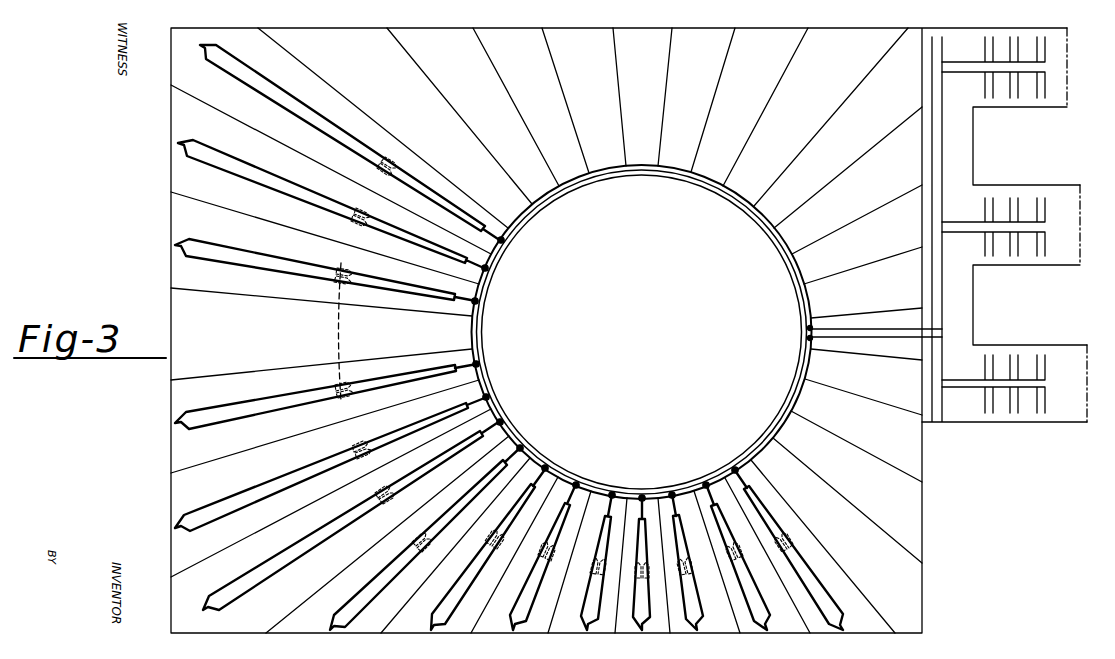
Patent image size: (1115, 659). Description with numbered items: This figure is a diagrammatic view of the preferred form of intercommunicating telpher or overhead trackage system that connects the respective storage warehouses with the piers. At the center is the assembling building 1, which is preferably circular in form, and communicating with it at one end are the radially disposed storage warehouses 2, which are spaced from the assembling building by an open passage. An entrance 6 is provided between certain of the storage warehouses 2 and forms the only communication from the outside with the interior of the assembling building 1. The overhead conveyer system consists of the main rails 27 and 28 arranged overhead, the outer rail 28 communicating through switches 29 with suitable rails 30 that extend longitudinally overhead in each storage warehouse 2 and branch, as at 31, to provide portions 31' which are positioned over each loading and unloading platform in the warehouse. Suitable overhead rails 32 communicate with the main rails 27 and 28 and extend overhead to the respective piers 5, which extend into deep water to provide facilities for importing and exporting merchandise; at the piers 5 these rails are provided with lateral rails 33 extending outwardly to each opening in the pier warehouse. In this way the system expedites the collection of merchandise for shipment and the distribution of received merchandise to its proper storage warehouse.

The assembling building 1 is at (642, 332).
The storage warehouses 2 is at (546, 330).
The piers 5 is at (1062, 383).
The entrance 6 is at (321, 334).
The main rail 27 is at (486, 359).
The outer rail 28 is at (478, 337).
The switches 29 is at (488, 404).
The rails 30 is at (537, 443).
The branching 31 is at (472, 385).
The rail portions 31' is at (529, 337).
The overhead rails 32 is at (860, 338).
The lateral rails 33 is at (1043, 367).